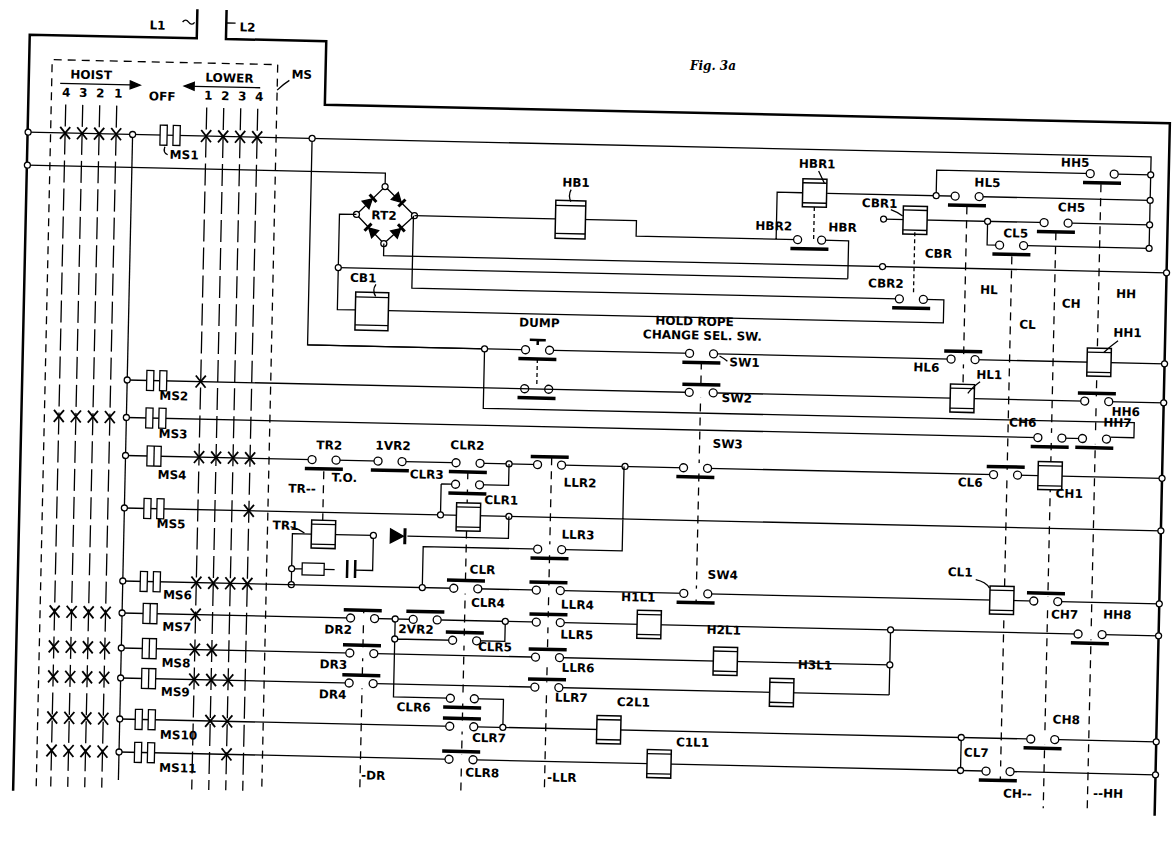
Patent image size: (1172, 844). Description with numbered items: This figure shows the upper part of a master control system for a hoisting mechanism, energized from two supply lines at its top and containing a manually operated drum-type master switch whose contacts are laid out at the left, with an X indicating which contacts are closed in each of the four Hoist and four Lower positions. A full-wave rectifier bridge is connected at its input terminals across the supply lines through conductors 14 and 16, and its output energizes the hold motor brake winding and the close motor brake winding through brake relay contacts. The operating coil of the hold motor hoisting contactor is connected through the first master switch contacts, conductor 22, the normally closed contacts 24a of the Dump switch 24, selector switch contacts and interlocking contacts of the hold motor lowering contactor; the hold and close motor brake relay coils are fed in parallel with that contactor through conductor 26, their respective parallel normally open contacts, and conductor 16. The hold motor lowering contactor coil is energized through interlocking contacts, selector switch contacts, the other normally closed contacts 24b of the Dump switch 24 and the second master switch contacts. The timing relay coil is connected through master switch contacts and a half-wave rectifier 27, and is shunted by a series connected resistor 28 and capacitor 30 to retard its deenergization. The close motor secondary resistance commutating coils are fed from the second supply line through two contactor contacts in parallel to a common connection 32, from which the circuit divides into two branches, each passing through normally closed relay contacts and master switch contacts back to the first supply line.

The conductor 14 is at (347, 164).
The conductor 16 is at (479, 246).
The conductor 22 is at (314, 234).
The Dump switch 24 is at (537, 364).
The normally closed contacts of Dump switch 24a is at (561, 339).
The normally closed contacts of Dump switch 24b is at (530, 372).
The conductor 26 is at (588, 131).
The half-wave rectifier 27 is at (398, 520).
The resistor 28 is at (322, 570).
The capacitor 30 is at (361, 552).
The common connection 32 is at (976, 732).